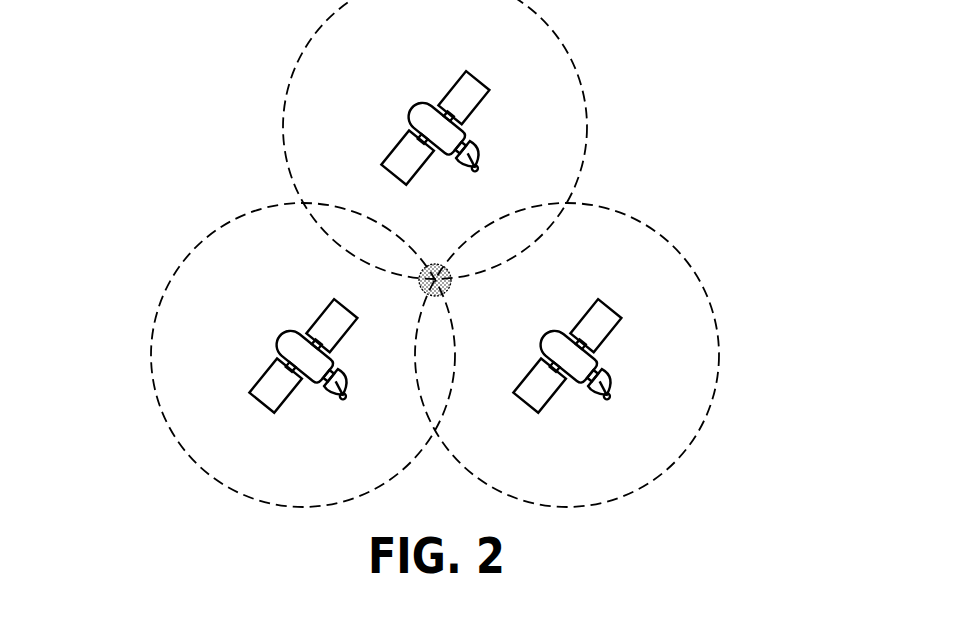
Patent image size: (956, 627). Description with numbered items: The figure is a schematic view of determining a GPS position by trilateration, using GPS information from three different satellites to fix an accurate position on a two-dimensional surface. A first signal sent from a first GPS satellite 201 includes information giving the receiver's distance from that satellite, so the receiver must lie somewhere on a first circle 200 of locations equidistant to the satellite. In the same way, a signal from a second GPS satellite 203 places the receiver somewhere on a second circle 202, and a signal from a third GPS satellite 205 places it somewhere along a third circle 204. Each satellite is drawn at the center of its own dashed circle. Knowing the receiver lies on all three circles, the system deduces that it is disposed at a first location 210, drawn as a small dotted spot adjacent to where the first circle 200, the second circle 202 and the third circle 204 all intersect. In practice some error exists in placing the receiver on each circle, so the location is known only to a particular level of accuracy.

The first circle 200 is at (153, 360).
The first GPS satellite 201 is at (279, 331).
The second circle 202 is at (718, 360).
The second GPS satellite 203 is at (541, 332).
The third circle 204 is at (587, 120).
The third GPS satellite 205 is at (413, 103).
The first location 210 is at (437, 263).